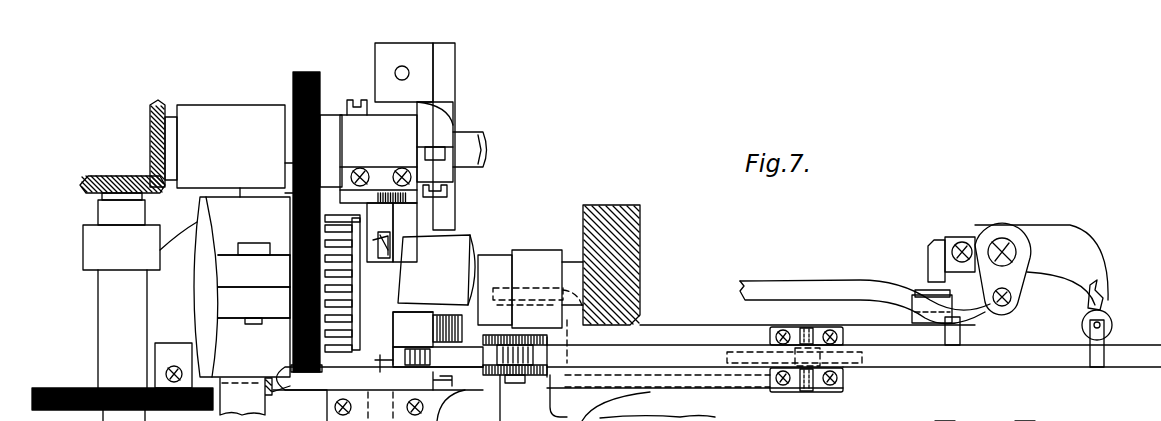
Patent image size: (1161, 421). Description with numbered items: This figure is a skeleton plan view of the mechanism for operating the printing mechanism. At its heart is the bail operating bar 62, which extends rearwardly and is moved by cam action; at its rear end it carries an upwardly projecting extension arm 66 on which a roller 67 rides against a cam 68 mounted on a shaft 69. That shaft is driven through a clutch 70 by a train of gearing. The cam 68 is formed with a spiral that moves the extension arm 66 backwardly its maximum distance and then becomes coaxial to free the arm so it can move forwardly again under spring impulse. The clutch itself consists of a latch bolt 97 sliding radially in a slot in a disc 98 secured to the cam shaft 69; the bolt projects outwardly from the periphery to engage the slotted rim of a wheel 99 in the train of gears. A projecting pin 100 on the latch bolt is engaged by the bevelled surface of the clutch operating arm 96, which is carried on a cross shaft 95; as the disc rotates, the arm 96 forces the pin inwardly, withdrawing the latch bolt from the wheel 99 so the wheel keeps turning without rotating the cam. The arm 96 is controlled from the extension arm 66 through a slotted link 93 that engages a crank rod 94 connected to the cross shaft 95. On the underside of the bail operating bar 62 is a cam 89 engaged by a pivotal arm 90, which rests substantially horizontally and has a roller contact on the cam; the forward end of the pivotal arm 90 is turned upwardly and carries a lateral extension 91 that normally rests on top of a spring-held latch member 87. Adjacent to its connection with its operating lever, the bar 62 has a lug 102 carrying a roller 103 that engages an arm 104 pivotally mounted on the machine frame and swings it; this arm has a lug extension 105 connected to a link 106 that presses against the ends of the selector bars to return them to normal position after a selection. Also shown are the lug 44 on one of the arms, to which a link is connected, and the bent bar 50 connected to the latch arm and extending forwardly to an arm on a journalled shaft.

The lug 44 is at (943, 415).
The bent bar 50 is at (1024, 416).
The operating bar 62 is at (673, 352).
The extension arm 66 is at (482, 358).
The roller 67 is at (433, 327).
The cam 68 is at (465, 251).
The shaft 69 is at (573, 272).
The clutch 70 is at (298, 216).
The latch member 87 is at (910, 320).
The cam 89 is at (855, 365).
The pivotal arm 90 is at (757, 384).
The lateral extension 91 is at (960, 333).
The slotted link 93 is at (448, 369).
The crank rod 94 is at (376, 370).
The cross shaft 95 is at (402, 338).
The clutch operating arm 96 is at (392, 238).
The latch bolt 97 is at (350, 218).
The disc 98 is at (292, 276).
The wheel 99 is at (300, 310).
The projecting pin 100 is at (300, 238).
The lug 102 is at (1099, 355).
The roller 103 is at (1113, 325).
The arm 104 is at (1103, 300).
The lug extension 105 is at (978, 232).
The link 106 is at (952, 240).